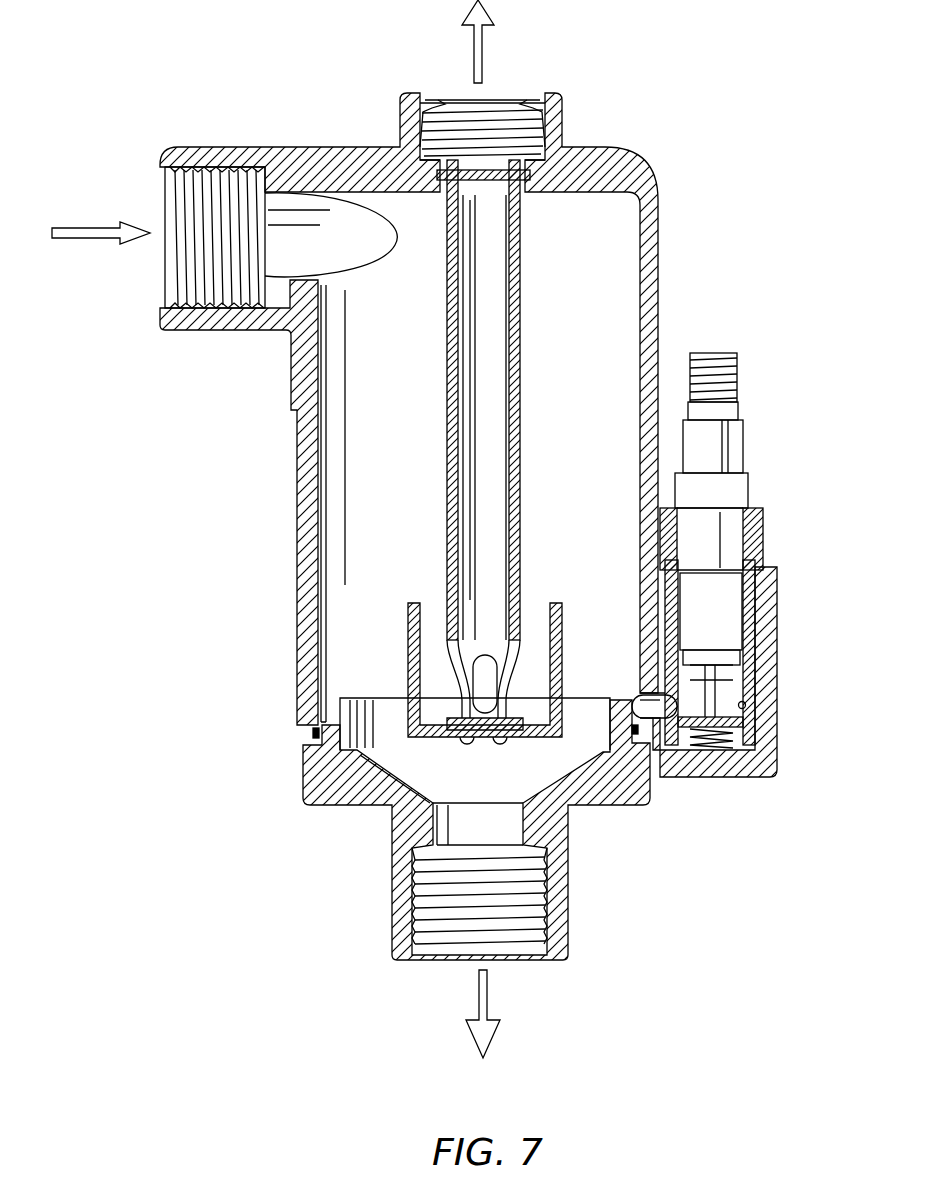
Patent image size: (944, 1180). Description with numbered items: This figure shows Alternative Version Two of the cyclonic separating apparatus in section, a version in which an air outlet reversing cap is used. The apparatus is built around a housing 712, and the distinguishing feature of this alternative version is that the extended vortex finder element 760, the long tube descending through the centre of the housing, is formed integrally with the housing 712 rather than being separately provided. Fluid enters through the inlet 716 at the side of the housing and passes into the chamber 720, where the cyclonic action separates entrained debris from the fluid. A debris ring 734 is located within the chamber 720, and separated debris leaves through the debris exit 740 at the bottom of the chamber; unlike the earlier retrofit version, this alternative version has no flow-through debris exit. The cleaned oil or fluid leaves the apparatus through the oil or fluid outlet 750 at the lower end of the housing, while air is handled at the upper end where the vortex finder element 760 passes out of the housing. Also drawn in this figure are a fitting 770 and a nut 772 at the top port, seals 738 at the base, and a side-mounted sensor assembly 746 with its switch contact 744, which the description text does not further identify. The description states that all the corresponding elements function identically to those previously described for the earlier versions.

The housing 712 is at (660, 243).
The inlet 716 is at (160, 307).
The chamber 720 is at (588, 247).
The debris ring 734 is at (318, 722).
The seal 738 is at (330, 700).
The debris exit 740 is at (558, 602).
The switch contact 744 is at (746, 706).
The sensor assembly 746 is at (750, 490).
The oil or fluid outlet 750 is at (532, 960).
The extended vortex finder element 760 is at (521, 444).
The top port 770 is at (452, 103).
The nut 772 is at (518, 168).